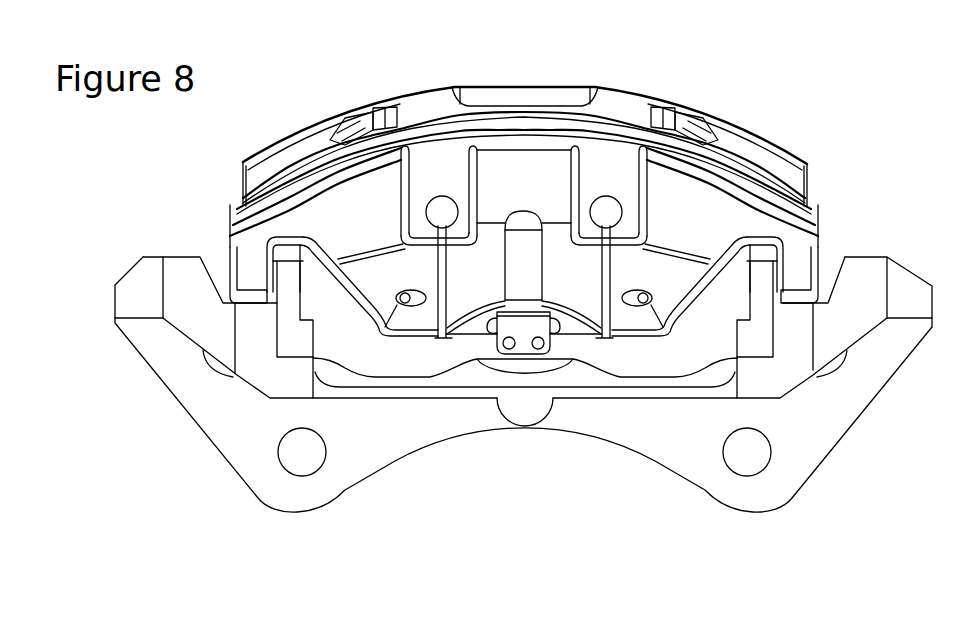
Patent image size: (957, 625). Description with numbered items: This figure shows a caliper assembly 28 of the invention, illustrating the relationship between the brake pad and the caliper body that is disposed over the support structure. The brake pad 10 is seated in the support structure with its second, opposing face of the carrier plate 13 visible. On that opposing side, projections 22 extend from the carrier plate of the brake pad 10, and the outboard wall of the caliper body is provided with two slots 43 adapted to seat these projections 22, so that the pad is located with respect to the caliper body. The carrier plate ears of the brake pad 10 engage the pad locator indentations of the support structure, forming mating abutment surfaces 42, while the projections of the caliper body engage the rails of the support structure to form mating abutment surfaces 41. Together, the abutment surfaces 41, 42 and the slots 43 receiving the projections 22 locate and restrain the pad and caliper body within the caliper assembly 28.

The brake pad 10 is at (580, 320).
The second opposing face of the brake pad carrier plate 13 is at (353, 325).
The projections of the carrier plate 22 is at (404, 307).
The caliper assembly 28 is at (819, 116).
The mating abutment surfaces 41 is at (267, 277).
The mating abutment surfaces 42 is at (280, 333).
The slots 43 is at (420, 322).